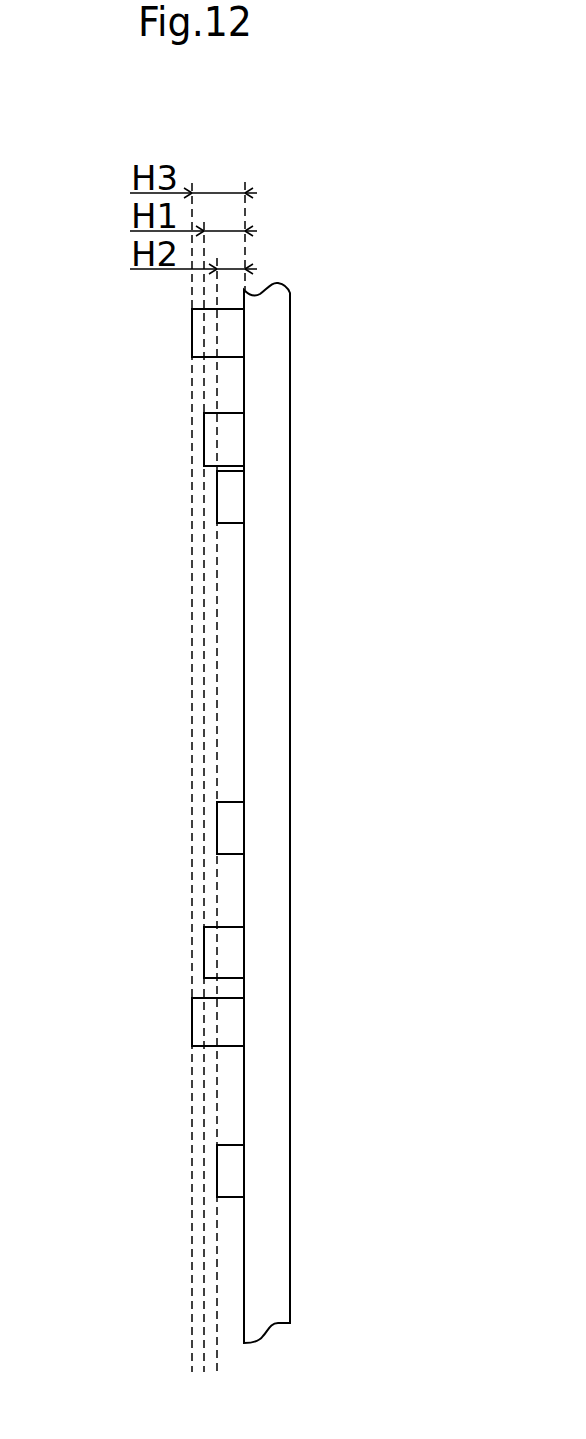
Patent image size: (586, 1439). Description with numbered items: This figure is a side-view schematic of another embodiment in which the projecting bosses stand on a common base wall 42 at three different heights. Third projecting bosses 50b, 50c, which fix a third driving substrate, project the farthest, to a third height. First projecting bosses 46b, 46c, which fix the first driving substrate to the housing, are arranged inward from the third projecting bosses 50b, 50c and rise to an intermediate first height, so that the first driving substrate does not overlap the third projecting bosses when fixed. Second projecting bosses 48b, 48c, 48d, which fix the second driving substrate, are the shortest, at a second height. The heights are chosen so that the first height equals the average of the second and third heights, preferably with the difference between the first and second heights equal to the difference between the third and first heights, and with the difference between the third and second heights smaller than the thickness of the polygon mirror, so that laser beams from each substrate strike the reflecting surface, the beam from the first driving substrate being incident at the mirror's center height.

The base member 42 is at (290, 385).
The third projecting boss 50b is at (192, 320).
The first projecting boss 46b is at (204, 445).
The second projecting boss 48b is at (217, 497).
The second projecting boss 48c is at (217, 829).
The first projecting boss 46c is at (204, 953).
The third projecting boss 50c is at (192, 1022).
The second projecting boss 48d is at (217, 1170).